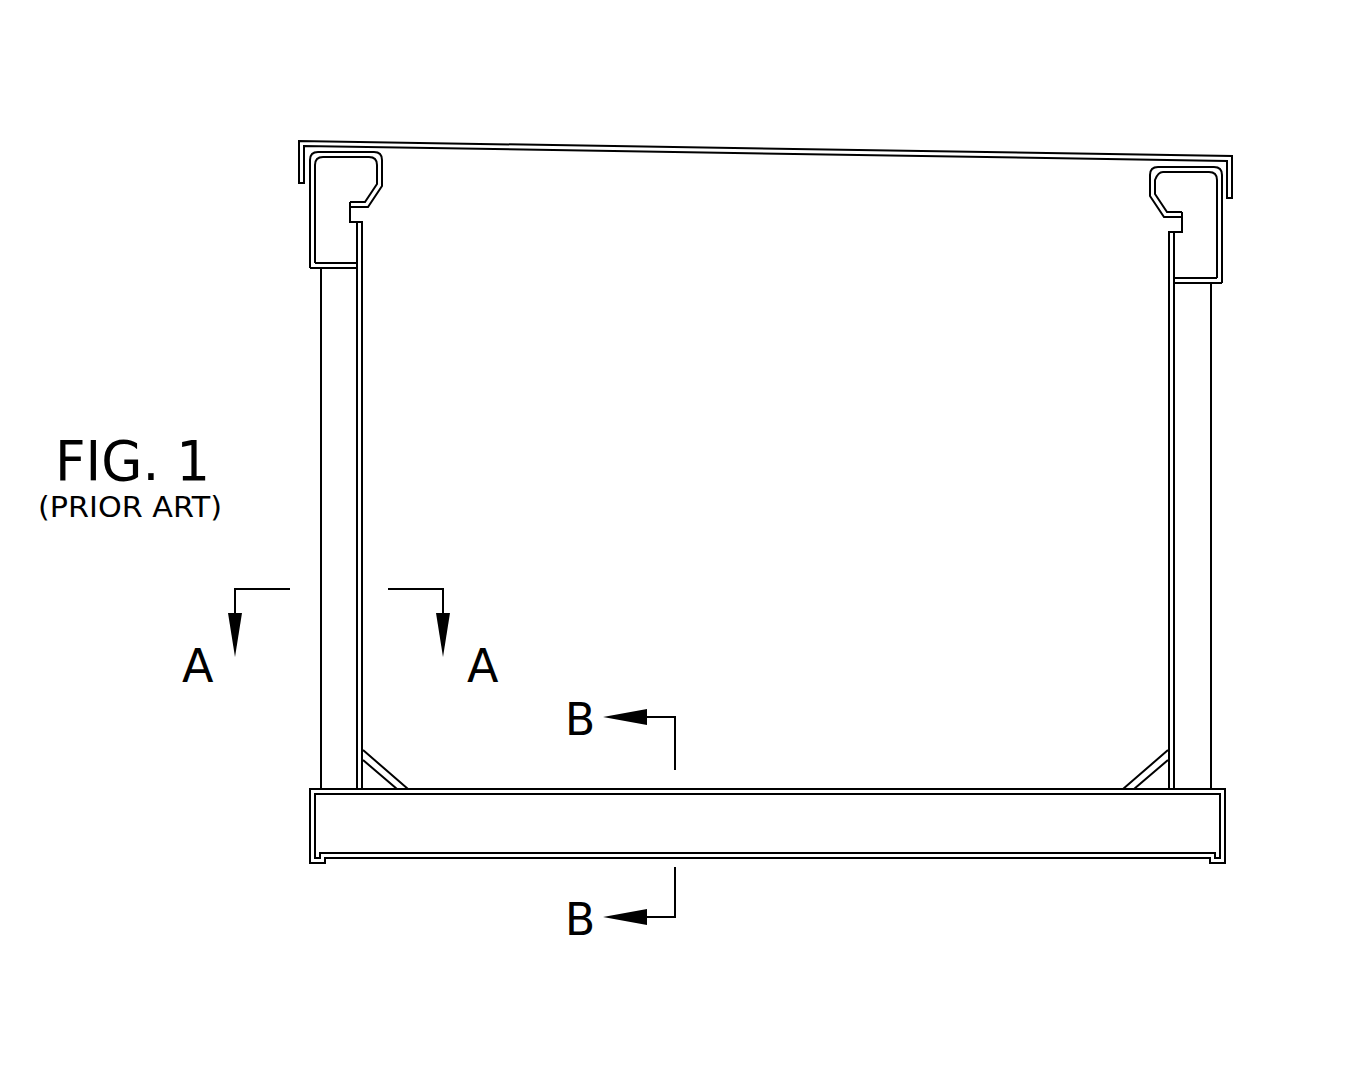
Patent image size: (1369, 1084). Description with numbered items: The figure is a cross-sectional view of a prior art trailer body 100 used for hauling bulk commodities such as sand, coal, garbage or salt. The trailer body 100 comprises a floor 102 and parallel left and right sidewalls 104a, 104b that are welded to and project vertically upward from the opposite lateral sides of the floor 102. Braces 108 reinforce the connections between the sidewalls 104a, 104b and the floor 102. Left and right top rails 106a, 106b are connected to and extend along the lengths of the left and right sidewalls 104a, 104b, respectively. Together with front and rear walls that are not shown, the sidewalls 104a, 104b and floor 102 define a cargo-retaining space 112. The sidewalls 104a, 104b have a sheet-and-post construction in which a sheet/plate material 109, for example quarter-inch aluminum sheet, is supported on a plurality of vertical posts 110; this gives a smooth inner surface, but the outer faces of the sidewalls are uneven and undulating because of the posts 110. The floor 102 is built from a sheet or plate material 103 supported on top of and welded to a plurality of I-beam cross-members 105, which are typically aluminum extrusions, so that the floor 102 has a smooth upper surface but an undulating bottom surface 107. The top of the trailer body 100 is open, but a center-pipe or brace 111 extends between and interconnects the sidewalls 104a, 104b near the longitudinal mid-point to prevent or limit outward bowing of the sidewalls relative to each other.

The trailer body 100 is at (1240, 182).
The floor 102 is at (907, 790).
The sheet or plate material 103 is at (755, 790).
The left sidewall 104a is at (368, 423).
The right sidewall 104b is at (1164, 432).
The I-beam cross-members 105 is at (755, 845).
The left top rail 106a is at (309, 222).
The right top rail 106b is at (1223, 237).
The undulating bottom surface 107 is at (912, 862).
The braces 108 is at (380, 763).
The sheet/plate material 109 is at (364, 535).
The vertical posts 110 is at (332, 417).
The center-pipe or brace 111 is at (807, 150).
The cargo-retaining space 112 is at (718, 222).